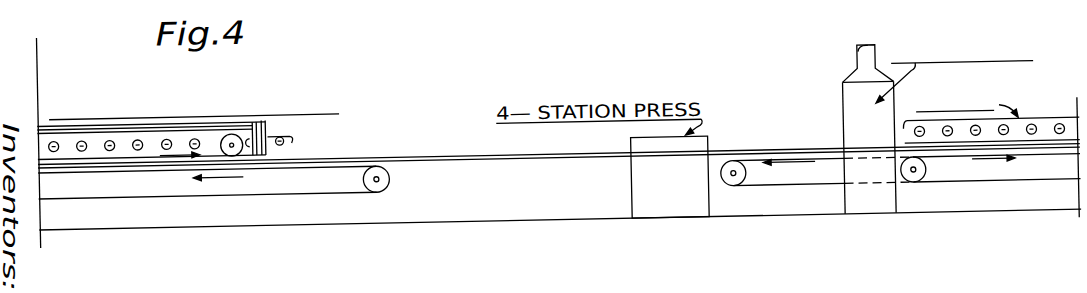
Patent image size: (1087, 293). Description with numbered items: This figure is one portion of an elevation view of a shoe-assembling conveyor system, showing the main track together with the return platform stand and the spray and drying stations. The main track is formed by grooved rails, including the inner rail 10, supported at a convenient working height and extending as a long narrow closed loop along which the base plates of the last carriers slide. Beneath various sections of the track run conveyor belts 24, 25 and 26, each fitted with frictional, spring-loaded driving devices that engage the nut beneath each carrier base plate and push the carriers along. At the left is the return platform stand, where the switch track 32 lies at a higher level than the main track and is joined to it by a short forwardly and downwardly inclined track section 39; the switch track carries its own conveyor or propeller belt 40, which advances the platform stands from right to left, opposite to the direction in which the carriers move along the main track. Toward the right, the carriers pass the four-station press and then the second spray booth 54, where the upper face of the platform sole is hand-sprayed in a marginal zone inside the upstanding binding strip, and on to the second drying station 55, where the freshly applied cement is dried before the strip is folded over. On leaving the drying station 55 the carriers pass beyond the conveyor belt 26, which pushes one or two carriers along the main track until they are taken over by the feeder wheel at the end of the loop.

The inner rail 10 is at (489, 162).
The conveyor belt 24 is at (172, 176).
The conveyor belt 25 is at (818, 173).
The conveyor belt 26 is at (1058, 174).
The switch track 32 is at (39, 129).
The inclined track section 39 is at (263, 162).
The conveyor belt 40 is at (116, 161).
The spray booth 54 is at (848, 108).
The drying station 55 is at (1056, 140).